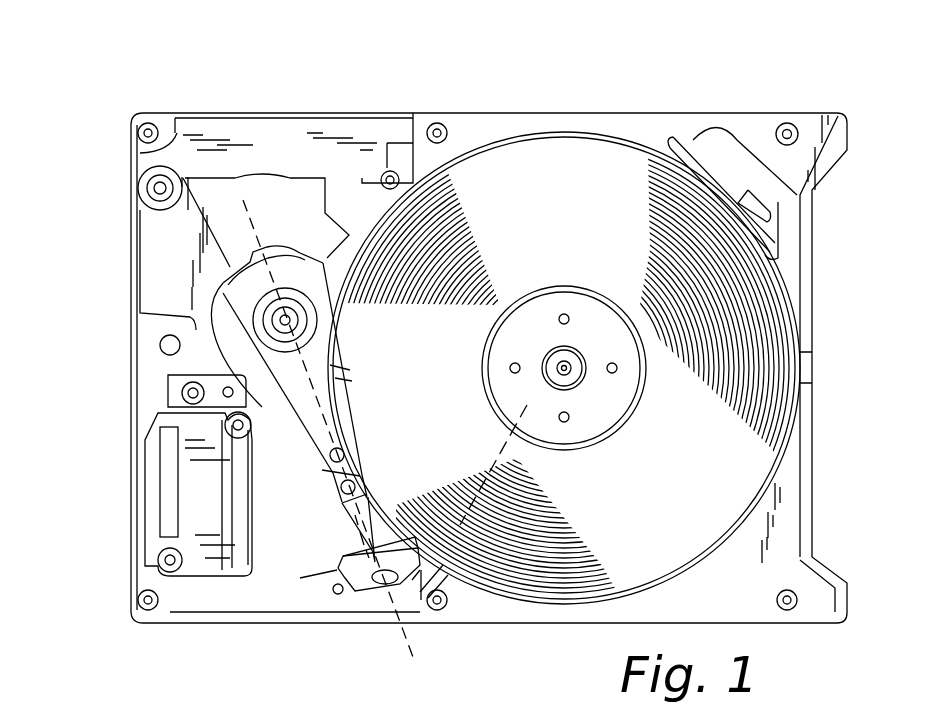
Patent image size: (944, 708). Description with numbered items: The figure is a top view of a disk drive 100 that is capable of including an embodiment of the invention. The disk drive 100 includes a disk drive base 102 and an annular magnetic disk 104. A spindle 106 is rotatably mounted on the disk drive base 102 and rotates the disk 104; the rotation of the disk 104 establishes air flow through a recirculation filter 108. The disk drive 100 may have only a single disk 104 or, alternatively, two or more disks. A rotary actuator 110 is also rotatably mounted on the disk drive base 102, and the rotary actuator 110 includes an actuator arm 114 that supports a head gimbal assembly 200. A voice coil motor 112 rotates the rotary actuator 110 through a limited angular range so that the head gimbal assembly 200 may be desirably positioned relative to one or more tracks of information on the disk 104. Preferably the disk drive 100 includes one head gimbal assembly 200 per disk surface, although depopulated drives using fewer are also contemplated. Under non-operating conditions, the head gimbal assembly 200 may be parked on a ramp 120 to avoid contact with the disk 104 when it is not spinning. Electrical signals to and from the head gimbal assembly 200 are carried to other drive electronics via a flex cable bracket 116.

The disk drive 100 is at (416, 72).
The disk drive base 102 is at (805, 502).
The annular magnetic disk 104 is at (558, 148).
The spindle 106 is at (582, 305).
The recirculation filter 108 is at (708, 170).
The rotary actuator 110 is at (270, 355).
The voice coil motor 112 is at (293, 203).
The actuator arm 114 is at (318, 442).
The flex cable bracket 116 is at (205, 512).
The ramp 120 is at (355, 592).
The head gimbal assembly 200 is at (333, 508).